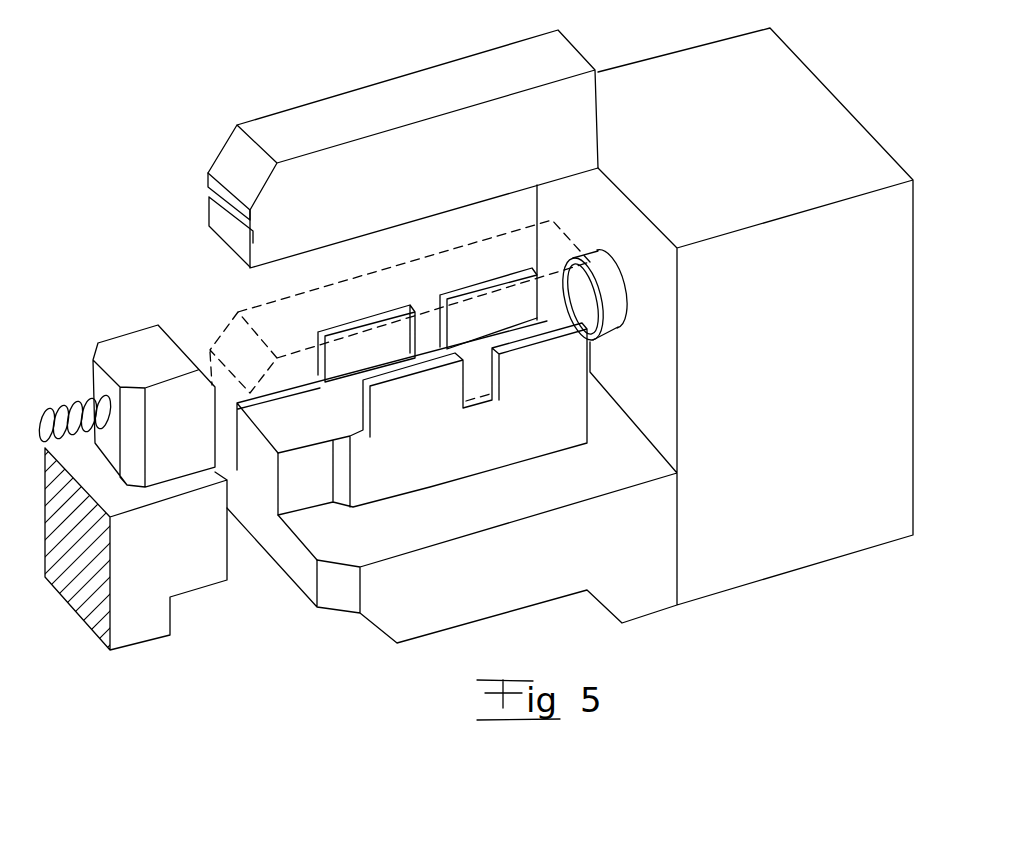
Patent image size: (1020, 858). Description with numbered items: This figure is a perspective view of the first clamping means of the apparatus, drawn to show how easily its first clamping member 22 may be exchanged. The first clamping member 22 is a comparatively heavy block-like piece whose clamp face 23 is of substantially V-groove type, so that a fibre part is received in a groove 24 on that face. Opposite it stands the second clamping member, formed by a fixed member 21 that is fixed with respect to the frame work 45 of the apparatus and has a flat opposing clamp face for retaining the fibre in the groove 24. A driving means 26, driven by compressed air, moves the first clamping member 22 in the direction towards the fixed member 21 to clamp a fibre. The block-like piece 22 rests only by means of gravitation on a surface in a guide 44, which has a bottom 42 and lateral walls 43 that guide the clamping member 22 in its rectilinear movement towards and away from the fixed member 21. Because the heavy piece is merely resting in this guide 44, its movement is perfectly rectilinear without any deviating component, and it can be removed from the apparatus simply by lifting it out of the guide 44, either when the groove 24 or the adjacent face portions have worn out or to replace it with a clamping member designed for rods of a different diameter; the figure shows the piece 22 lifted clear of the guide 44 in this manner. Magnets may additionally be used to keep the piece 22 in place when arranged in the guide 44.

The fixed member 21 is at (122, 345).
The first clamping member 22 is at (404, 86).
The clamp face 23 is at (212, 218).
The groove 24 is at (212, 192).
The driving means 26 is at (620, 278).
The bottom 42 is at (333, 412).
The lateral walls 43 is at (417, 388).
The guide 44 is at (470, 346).
The frame work 45 is at (193, 577).